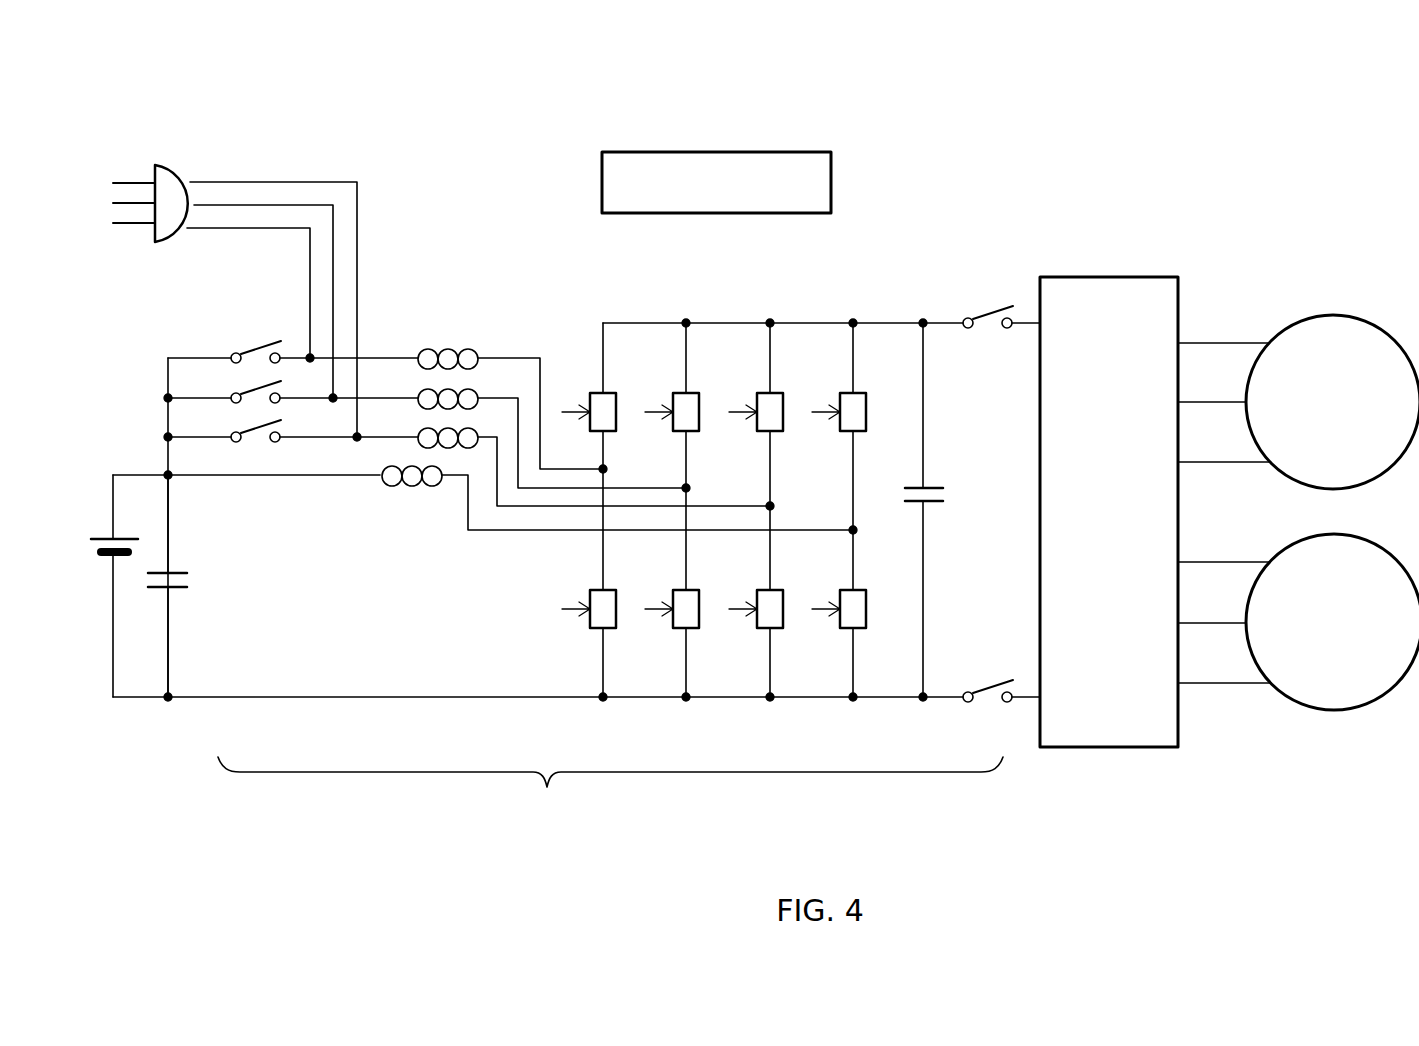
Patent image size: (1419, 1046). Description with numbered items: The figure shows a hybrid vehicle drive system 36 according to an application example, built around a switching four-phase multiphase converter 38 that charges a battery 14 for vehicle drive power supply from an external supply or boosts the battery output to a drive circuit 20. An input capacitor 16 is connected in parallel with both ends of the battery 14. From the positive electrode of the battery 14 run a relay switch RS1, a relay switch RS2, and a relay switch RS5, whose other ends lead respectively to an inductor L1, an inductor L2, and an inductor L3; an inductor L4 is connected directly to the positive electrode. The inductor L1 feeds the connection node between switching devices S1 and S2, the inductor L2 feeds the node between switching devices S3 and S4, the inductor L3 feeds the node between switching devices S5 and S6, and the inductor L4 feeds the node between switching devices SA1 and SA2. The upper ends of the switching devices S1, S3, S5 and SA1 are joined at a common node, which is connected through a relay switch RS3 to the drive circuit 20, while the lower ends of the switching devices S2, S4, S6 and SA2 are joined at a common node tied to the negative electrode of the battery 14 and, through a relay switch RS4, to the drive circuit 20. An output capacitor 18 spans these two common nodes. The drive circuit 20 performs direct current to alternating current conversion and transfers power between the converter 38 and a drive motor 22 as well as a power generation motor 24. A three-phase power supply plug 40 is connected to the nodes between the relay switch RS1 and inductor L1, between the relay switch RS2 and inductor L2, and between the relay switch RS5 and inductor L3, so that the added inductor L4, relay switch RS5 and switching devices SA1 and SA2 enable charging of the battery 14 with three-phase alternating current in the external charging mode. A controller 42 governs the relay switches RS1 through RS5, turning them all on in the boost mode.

The battery 14 is at (100, 538).
The input capacitor 16 is at (180, 572).
The output capacitor 18 is at (936, 485).
The drive circuit 20 is at (1118, 277).
The drive motor 22 is at (1336, 315).
The power generation motor 24 is at (1323, 712).
The hybrid vehicle drive system 36 is at (418, 136).
The switching four-phase multiphase converter 38 is at (610, 788).
The three-phase power supply plug 40 is at (160, 165).
The controller 42 is at (755, 152).
The relay switch RS1 is at (253, 344).
The relay switch RS2 is at (252, 384).
The relay switch RS3 is at (993, 308).
The relay switch RS4 is at (988, 706).
The relay switch RS5 is at (252, 423).
The inductor L1 is at (450, 350).
The inductor L2 is at (455, 390).
The inductor L3 is at (425, 449).
The inductor L4 is at (404, 492).
The switching device S1 is at (613, 392).
The switching device S2 is at (613, 590).
The switching device S3 is at (696, 392).
The switching device S4 is at (696, 590).
The switching device S5 is at (780, 392).
The switching device S6 is at (780, 590).
The switching device SA1 is at (862, 392).
The switching device SA2 is at (862, 590).